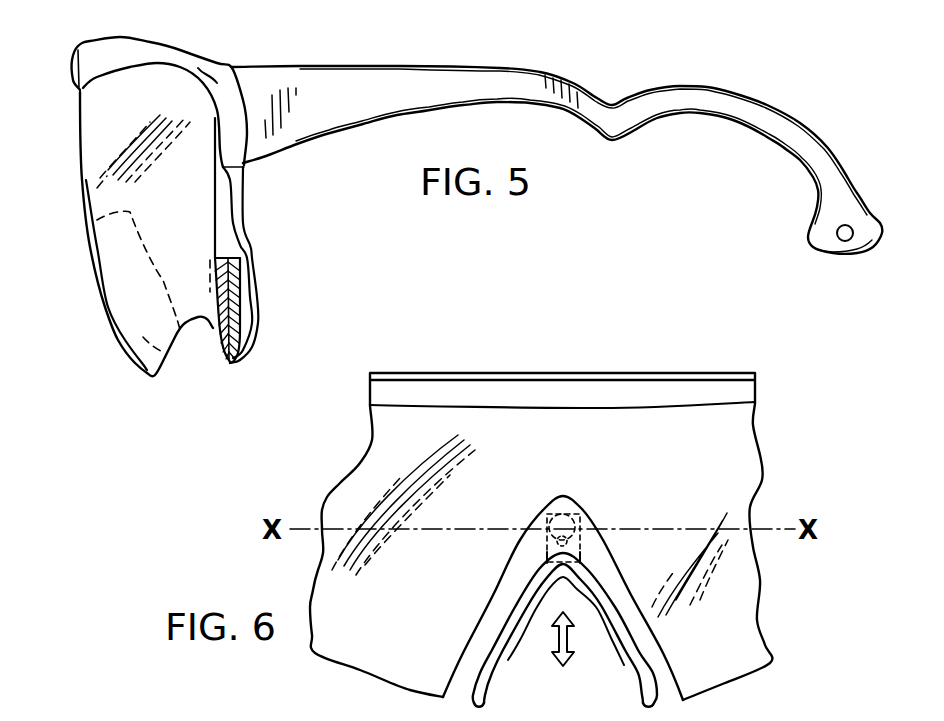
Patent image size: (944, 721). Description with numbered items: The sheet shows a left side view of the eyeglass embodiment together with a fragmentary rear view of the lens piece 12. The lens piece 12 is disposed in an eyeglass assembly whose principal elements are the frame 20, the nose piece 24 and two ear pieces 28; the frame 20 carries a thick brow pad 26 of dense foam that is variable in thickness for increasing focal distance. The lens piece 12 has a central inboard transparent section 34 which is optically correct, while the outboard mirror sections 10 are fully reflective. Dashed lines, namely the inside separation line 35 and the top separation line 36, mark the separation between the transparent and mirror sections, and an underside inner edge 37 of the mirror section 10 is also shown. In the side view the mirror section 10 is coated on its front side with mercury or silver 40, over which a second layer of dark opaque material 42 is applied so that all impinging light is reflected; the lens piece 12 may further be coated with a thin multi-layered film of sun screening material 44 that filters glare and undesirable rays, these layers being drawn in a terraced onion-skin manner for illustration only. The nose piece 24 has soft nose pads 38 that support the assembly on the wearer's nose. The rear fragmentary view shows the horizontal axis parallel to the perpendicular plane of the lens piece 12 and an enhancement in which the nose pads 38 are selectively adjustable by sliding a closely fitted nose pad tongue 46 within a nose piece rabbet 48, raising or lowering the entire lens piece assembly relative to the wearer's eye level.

In FIG. 5, the mirror section 10 is at (244, 327).
In FIG. 5, the lens piece 12 is at (100, 150).
In FIG. 5, the frame 20 is at (210, 72).
In FIG. 5, the nose piece 24 is at (99, 312).
In FIG. 6, the nose piece 24 is at (475, 650).
In FIG. 6, the brow pad 26 is at (565, 390).
In FIG. 5, the ear piece 28 is at (370, 92).
In FIG. 5, the transparent section 34 is at (228, 188).
In FIG. 6, the transparent section 34 is at (730, 623).
In FIG. 5, the inside separation line 35 is at (207, 303).
In FIG. 5, the top separation line 36 is at (228, 257).
In FIG. 5, the underside inner edge 37 is at (222, 345).
In FIG. 5, the nose pad 38 is at (165, 356).
In FIG. 6, the nose pad 38 is at (627, 675).
In FIG. 5, the mercury coating 40 is at (230, 268).
In FIG. 5, the dark opaque material 42 is at (228, 293).
In FIG. 5, the sun screening material 44 is at (217, 216).
In FIG. 6, the nose pad tongue 46 is at (578, 535).
In FIG. 6, the nose piece rabbet 48 is at (548, 523).